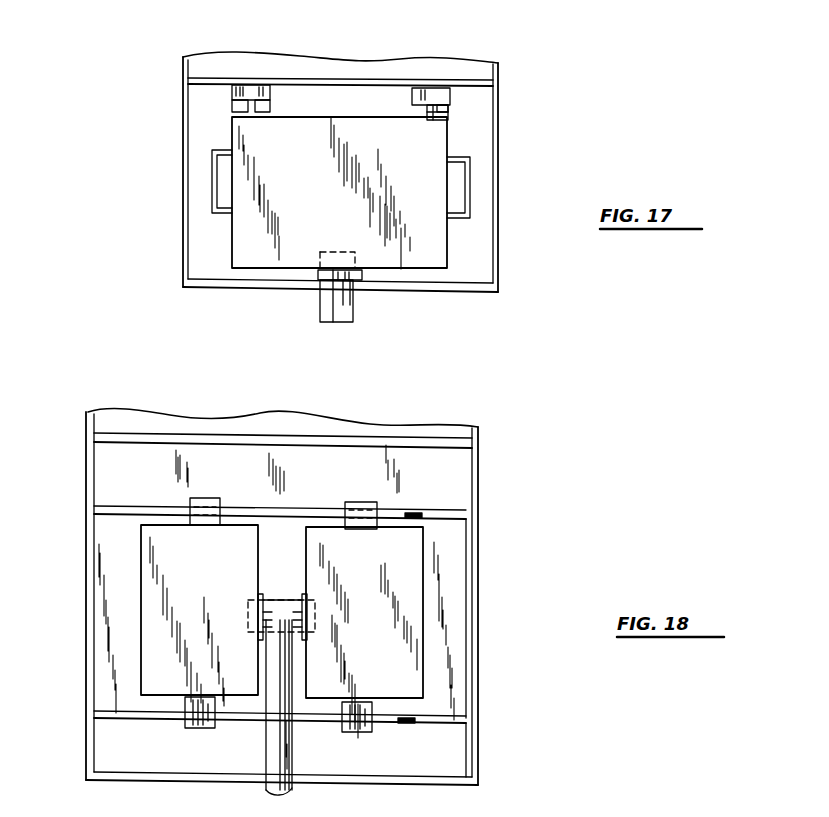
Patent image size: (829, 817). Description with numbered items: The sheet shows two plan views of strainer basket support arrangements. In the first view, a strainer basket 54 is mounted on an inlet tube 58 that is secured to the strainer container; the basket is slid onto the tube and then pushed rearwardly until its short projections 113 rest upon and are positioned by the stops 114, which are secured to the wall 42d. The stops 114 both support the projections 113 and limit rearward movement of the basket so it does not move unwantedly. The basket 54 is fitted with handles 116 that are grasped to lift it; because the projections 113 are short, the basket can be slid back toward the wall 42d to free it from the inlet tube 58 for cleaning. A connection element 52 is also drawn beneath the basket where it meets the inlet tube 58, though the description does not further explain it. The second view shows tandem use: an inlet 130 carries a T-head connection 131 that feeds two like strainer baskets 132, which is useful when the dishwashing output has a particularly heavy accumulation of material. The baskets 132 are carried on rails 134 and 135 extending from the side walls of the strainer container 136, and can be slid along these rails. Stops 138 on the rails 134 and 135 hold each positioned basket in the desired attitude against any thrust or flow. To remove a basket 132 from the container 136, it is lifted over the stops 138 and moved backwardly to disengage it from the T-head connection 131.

In FIG. 17, the wall 42d is at (340, 78).
In FIG. 17, the stop 114 is at (413, 97).
In FIG. 17, the projection 113 is at (435, 110).
In FIG. 17, the handles 116 is at (467, 175).
In FIG. 17, the strainer basket 54 is at (412, 232).
In FIG. 17, the coupling 52 is at (318, 272).
In FIG. 17, the inlet tube 58 is at (352, 305).
In FIG. 18, the rail 134 is at (440, 515).
In FIG. 18, the strainer container 136 is at (473, 692).
In FIG. 18, the rail 135 is at (306, 732).
In FIG. 18, the strainer baskets 132 is at (162, 595).
In FIG. 18, the T-head connection 131 is at (283, 600).
In FIG. 18, the inlet 130 is at (278, 740).
In FIG. 18, the stops 138 is at (172, 715).